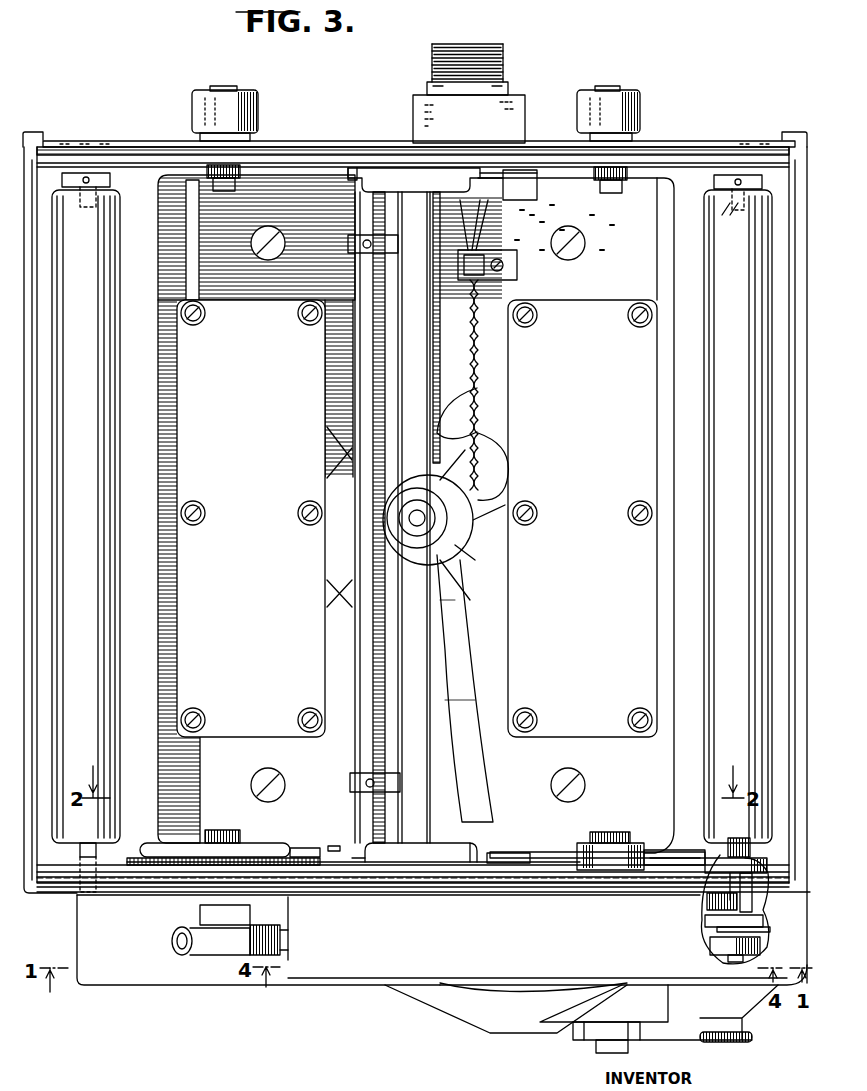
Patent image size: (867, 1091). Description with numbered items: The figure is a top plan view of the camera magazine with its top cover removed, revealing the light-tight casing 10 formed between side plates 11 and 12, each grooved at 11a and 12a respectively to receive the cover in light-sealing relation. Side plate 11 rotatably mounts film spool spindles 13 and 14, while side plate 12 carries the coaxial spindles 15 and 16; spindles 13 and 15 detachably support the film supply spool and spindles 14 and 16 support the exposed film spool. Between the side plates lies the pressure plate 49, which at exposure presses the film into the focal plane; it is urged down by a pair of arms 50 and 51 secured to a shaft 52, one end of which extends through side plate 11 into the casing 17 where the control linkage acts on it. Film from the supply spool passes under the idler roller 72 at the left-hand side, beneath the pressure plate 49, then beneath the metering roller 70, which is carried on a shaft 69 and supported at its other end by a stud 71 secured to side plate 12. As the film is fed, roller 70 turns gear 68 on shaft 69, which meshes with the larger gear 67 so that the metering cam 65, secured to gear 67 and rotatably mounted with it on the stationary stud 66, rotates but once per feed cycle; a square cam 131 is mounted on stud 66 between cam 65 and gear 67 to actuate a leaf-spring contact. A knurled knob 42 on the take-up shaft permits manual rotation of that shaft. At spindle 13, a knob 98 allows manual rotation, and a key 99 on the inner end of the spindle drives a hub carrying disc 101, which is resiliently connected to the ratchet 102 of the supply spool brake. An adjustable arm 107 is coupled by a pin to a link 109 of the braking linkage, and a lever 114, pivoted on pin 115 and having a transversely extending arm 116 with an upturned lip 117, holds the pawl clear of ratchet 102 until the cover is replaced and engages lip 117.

The light-tight casing 10 is at (26, 130).
The side plate 11 is at (405, 893).
The groove 11a is at (447, 885).
The side plate 12 is at (367, 148).
The groove 12a is at (292, 150).
The film spool spindle 13 is at (226, 830).
The film spool spindle 14 is at (608, 832).
The spindle 15 is at (236, 180).
The spindle 16 is at (597, 186).
The casing 17 is at (346, 958).
The knurled knob 42 is at (598, 1037).
The pressure plate 49 is at (147, 200).
The arm 50 is at (360, 783).
The arm 51 is at (348, 245).
The shaft 52 is at (365, 651).
The metering cam 65 is at (700, 930).
The stationary shaft or stud 66 is at (735, 962).
The gear 67 is at (707, 903).
The gear 68 is at (752, 903).
The shaft 69 is at (740, 843).
The metering roller 70 is at (724, 575).
The stud 71 is at (728, 224).
The idler roller 72 is at (103, 563).
The knob 98 is at (200, 915).
The key 99 is at (248, 842).
The disc 101 is at (290, 848).
The ratchet 102 is at (132, 858).
The arm 107 is at (680, 850).
The link 109 is at (552, 852).
The lever 114 is at (355, 857).
The pin 115 is at (333, 846).
The transversely extending arm 116 is at (470, 864).
The upturned lip 117 is at (520, 856).
The square cam 131 is at (705, 921).